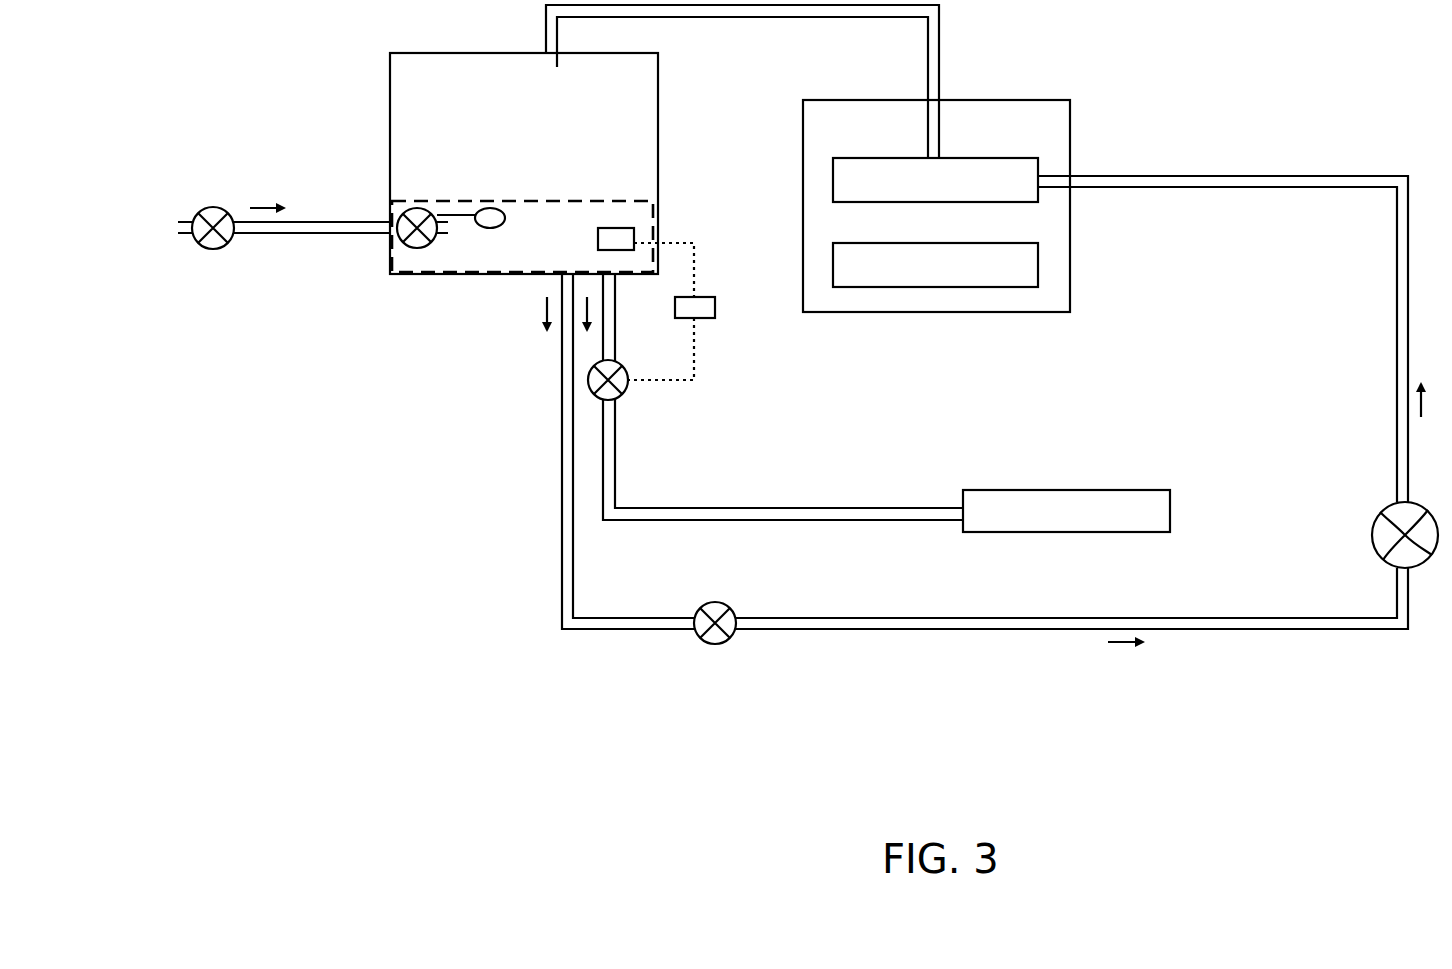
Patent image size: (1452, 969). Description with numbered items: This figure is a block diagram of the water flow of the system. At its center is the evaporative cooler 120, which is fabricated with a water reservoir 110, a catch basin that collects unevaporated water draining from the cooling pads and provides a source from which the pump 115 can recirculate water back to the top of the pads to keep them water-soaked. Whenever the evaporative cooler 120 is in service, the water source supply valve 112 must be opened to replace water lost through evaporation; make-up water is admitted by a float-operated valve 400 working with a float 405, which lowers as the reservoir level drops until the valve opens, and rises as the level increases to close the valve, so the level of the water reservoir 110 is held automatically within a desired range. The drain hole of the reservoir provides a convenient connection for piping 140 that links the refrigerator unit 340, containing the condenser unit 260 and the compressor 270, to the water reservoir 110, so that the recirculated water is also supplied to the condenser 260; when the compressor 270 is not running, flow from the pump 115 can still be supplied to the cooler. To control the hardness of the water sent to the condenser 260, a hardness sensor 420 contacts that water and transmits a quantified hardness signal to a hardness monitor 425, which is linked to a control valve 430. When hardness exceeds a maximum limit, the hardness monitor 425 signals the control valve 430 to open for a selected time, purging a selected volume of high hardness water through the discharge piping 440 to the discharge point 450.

The water reservoir 110 is at (641, 203).
The water source supply valve 112 is at (213, 207).
The pump 115 is at (1385, 512).
The evaporative cooler 120 is at (659, 70).
The piping 140 is at (1172, 177).
The condenser unit 260 is at (953, 158).
The compressor 270 is at (948, 243).
The refrigerator unit 340 is at (980, 100).
The float-operated valve 400 is at (417, 248).
The float 405 is at (492, 228).
The hardness sensor 420 is at (634, 232).
The hardness monitor 425 is at (715, 308).
The control valve 430 is at (625, 390).
The discharge piping 440 is at (750, 508).
The discharge point 450 is at (1077, 490).